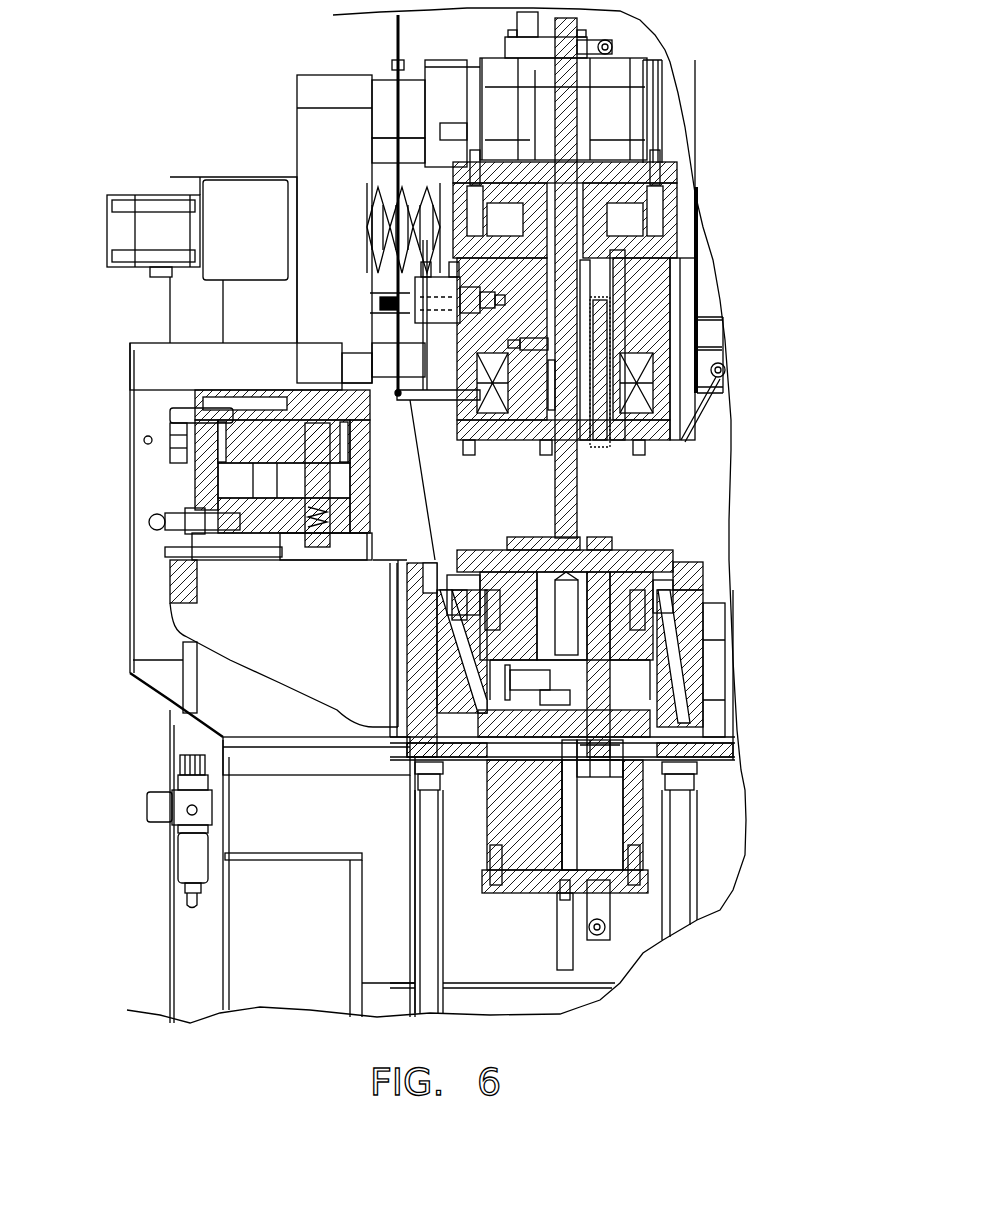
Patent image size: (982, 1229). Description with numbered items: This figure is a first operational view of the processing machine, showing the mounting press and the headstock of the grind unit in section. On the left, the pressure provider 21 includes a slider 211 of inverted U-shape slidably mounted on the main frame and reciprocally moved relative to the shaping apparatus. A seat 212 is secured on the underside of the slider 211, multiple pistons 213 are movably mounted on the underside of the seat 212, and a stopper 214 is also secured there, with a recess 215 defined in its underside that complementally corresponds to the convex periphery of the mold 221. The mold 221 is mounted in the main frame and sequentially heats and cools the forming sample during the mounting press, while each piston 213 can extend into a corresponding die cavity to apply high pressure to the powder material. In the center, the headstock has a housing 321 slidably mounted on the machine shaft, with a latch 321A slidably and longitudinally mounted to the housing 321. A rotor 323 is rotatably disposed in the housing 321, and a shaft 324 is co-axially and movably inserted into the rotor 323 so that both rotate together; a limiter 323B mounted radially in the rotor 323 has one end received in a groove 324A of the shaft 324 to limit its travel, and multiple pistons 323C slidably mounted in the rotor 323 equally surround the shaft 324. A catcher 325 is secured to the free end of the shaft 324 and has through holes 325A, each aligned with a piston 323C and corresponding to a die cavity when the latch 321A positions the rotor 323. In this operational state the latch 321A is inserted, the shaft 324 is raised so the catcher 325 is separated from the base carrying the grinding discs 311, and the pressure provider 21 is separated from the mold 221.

The pressure provider 21 is at (165, 395).
The slider 211 is at (207, 475).
The seat 212 is at (240, 477).
The pistons 213 is at (320, 480).
The stopper 214 is at (203, 537).
The recess 215 is at (190, 548).
The mold 221 is at (635, 580).
The grinding disc 311 is at (470, 562).
The housing 321 is at (425, 30).
The latch 321A is at (493, 293).
The rotor 323 is at (625, 328).
The limiter 323B is at (540, 345).
The pistons 323C is at (602, 307).
The shaft 324 is at (570, 455).
The groove 324A is at (553, 387).
The catcher 325 is at (518, 542).
The through holes 325A is at (603, 530).